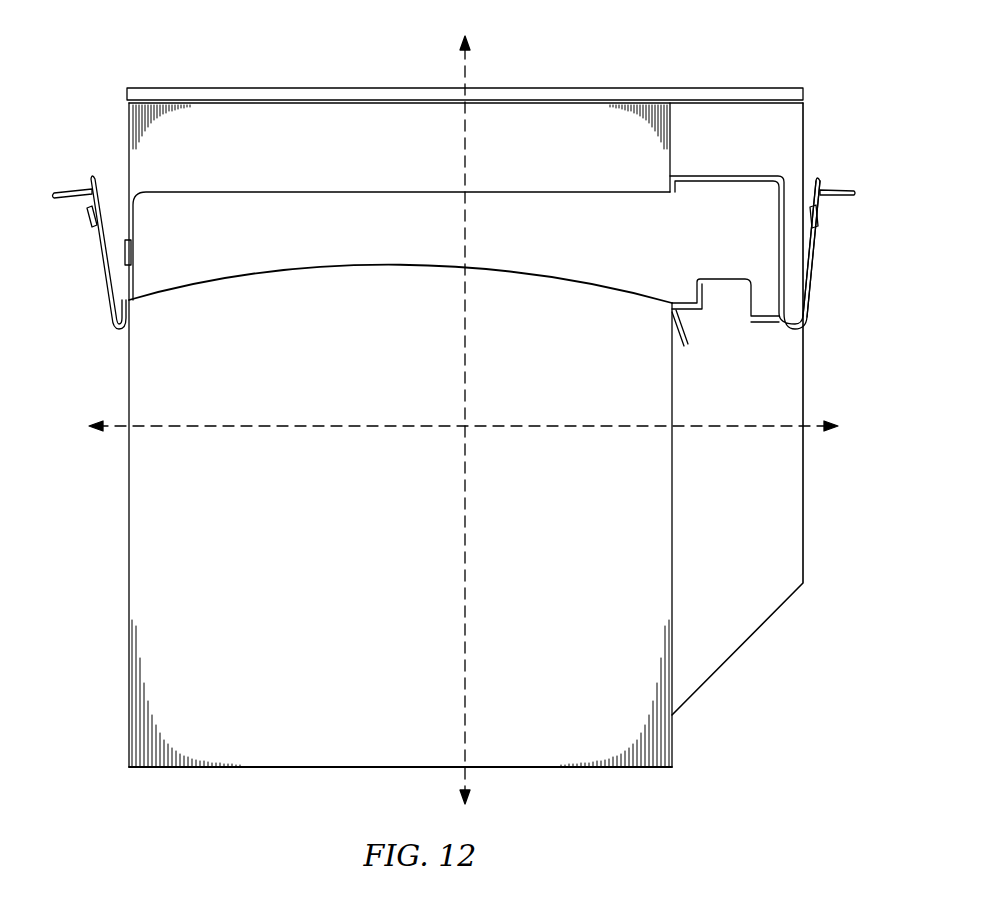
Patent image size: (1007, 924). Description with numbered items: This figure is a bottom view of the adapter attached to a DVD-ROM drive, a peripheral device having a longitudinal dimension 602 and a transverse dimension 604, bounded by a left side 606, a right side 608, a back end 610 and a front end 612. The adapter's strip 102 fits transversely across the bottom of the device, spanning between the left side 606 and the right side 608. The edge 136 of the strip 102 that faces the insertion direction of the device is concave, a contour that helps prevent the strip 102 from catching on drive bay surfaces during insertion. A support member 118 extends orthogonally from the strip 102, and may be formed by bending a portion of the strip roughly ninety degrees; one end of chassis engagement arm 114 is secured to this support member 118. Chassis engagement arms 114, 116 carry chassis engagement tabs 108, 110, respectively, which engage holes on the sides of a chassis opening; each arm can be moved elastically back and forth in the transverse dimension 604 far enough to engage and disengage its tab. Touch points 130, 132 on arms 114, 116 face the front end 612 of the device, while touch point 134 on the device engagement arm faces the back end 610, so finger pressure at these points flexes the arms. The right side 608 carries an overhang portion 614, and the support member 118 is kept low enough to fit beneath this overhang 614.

The strip 102 is at (277, 205).
The chassis engagement tab 108 is at (819, 218).
The chassis engagement tab 110 is at (93, 222).
The chassis engagement arm 114 is at (813, 293).
The chassis engagement arm 116 is at (103, 273).
The support member 118 is at (725, 175).
The touch point 130 is at (820, 177).
The touch point 132 is at (90, 177).
The touch point 134 is at (687, 333).
The edge 136 is at (521, 278).
The longitudinal dimension 602 is at (465, 625).
The transverse dimension 604 is at (238, 426).
The left side 606 is at (129, 575).
The right side 608 is at (680, 510).
The back end 610 is at (283, 768).
The front end 612 is at (640, 88).
The overhang portion 614 is at (738, 635).